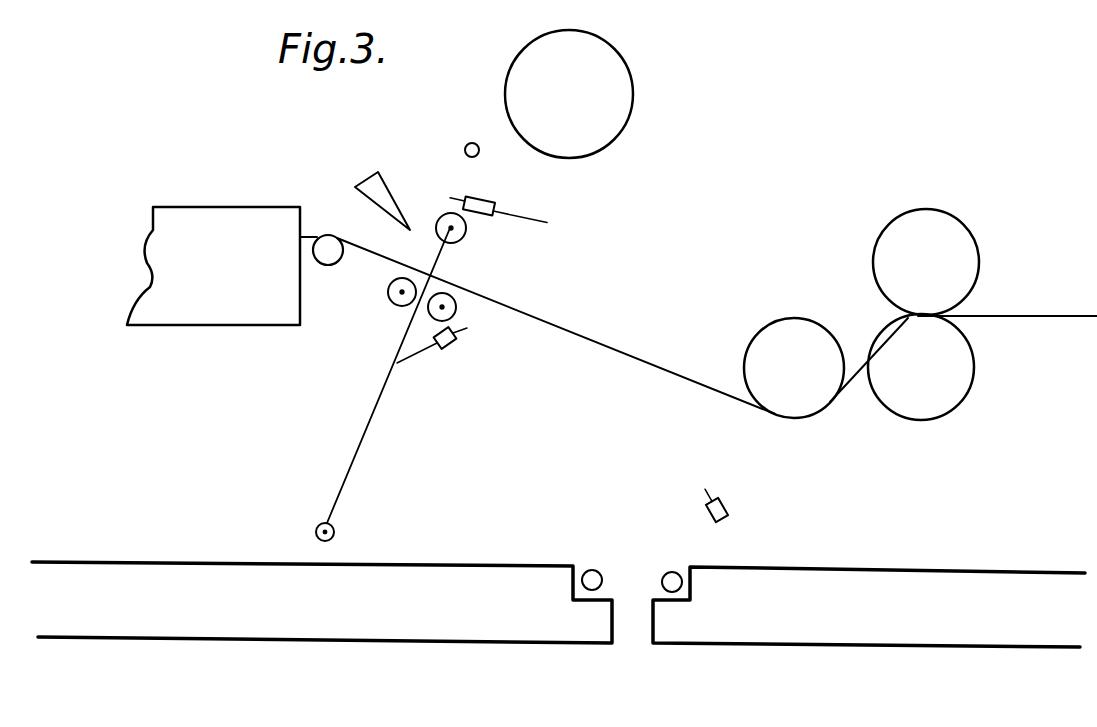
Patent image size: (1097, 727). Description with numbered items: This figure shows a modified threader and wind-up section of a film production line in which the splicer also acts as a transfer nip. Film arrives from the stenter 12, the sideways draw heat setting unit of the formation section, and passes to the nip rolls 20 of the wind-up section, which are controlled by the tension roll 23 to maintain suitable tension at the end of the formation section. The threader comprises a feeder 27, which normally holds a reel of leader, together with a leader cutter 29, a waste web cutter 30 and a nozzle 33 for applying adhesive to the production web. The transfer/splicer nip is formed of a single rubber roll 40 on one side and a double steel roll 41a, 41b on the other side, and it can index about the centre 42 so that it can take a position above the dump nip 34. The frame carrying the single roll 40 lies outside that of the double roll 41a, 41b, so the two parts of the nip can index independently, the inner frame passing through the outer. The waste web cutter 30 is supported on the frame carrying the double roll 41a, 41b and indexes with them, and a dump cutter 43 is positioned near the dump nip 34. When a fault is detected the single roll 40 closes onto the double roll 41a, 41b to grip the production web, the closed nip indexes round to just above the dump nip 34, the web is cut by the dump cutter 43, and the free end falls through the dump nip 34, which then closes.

The sideways draw heat setting unit (stenter) 12 is at (225, 317).
The nip rolls 20 is at (938, 232).
The tension roll 23 is at (790, 330).
The feeder 27 is at (613, 103).
The leader cutter 29 is at (520, 209).
The waste web cutter 30 is at (441, 350).
The nozzle for adhesive 33 is at (367, 183).
The dump nip 34 is at (668, 575).
The single rubber roll 40 is at (464, 236).
The double steel roll 41a is at (402, 292).
The double steel roll 41b is at (456, 308).
The centre 42 is at (316, 531).
The dump cutter 43 is at (727, 505).